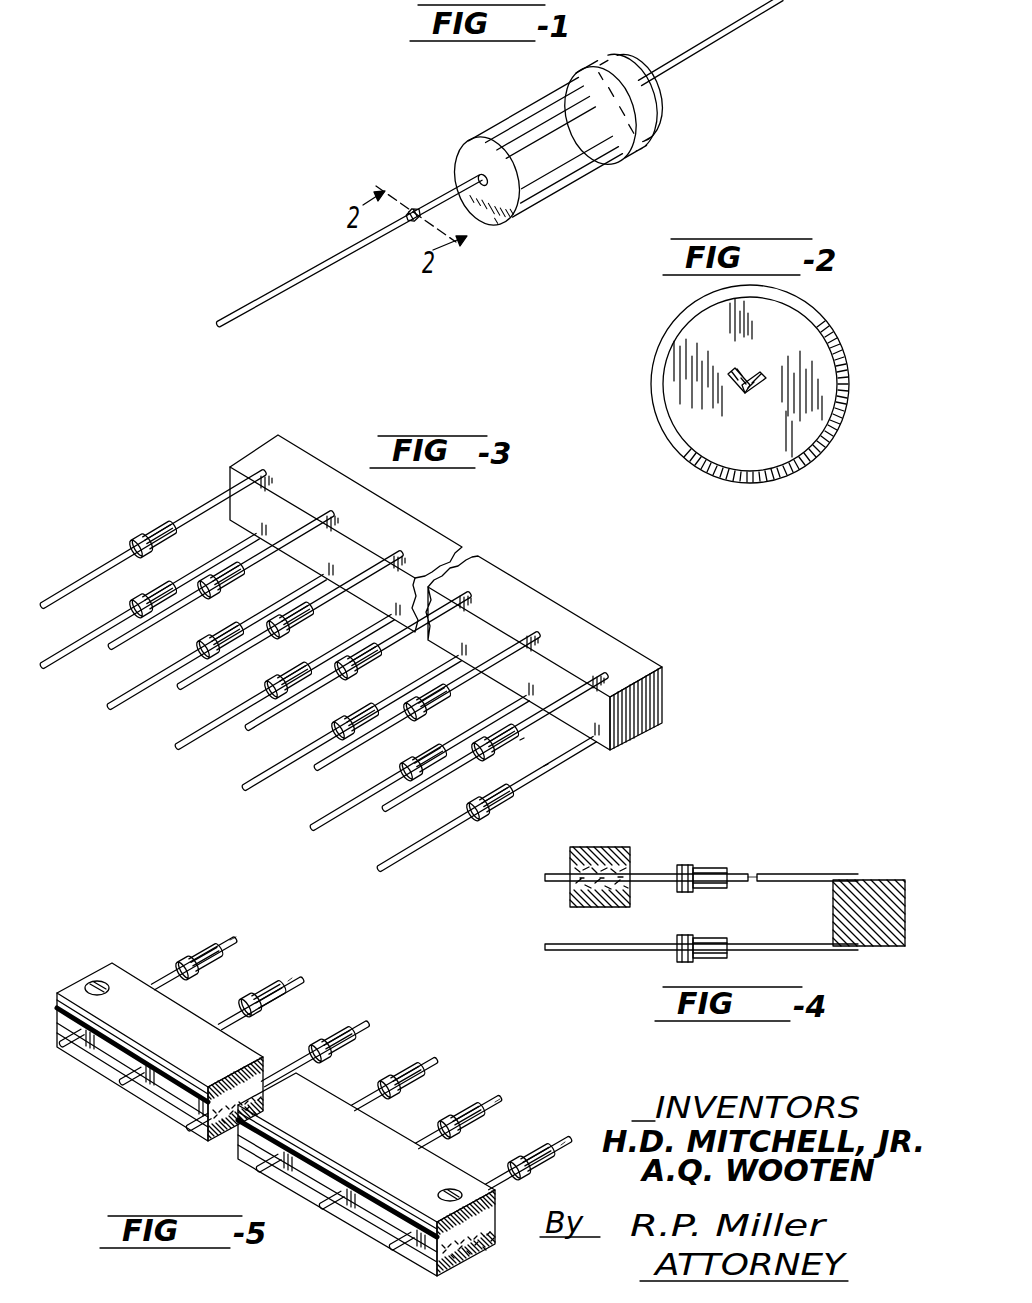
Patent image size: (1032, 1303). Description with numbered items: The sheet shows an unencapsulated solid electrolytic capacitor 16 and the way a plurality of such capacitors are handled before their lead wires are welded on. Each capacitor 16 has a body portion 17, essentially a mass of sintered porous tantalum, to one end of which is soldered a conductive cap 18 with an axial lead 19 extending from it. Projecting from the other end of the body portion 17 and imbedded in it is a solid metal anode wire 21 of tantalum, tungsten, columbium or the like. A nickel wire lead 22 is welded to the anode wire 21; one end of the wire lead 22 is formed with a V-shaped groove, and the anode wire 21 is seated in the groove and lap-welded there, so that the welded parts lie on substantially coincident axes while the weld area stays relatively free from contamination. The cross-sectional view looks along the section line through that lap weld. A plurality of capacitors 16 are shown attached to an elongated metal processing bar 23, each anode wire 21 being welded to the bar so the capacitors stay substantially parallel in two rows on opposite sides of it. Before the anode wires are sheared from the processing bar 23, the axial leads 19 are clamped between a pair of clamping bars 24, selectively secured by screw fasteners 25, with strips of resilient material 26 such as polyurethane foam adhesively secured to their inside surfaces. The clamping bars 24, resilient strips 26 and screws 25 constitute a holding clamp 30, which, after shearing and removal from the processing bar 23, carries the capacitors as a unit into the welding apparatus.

In FIG. 1, the solid electrolytic capacitor 16 is at (499, 164).
In FIG. 2, the solid electrolytic capacitor 16 is at (758, 405).
In FIG. 3, the solid electrolytic capacitor 16 is at (323, 647).
In FIG. 1, the body portion 17 is at (499, 128).
In FIG. 2, the body portion 17 is at (680, 410).
In FIG. 3, the body portion 17 is at (163, 587).
In FIG. 4, the body portion 17 is at (728, 900).
In FIG. 5, the body portion 17 is at (333, 1030).
In FIG. 1, the conductive cap 18 is at (605, 72).
In FIG. 2, the conductive cap 18 is at (830, 340).
In FIG. 3, the conductive cap 18 is at (350, 678).
In FIG. 4, the conductive cap 18 is at (682, 900).
In FIG. 5, the conductive cap 18 is at (250, 1005).
In FIG. 1, the axial lead 19 is at (707, 43).
In FIG. 3, the axial lead 19 is at (118, 697).
In FIG. 4, the axial lead 19 is at (655, 905).
In FIG. 5, the axial lead 19 is at (135, 1088).
In FIG. 1, the anode wire 21 is at (433, 197).
In FIG. 2, the anode wire 21 is at (753, 370).
In FIG. 3, the anode wire 21 is at (546, 765).
In FIG. 4, the anode wire 21 is at (746, 875).
In FIG. 5, the anode wire 21 is at (290, 972).
In FIG. 1, the wire lead 22 is at (270, 290).
In FIG. 2, the wire lead 22 is at (747, 400).
In FIG. 3, the processing bar 23 is at (641, 660).
In FIG. 4, the processing bar 23 is at (880, 880).
In FIG. 5, the processing bar 23 is at (160, 1026).
In FIG. 4, the clamping bar 24 is at (628, 848).
In FIG. 5, the clamping bar 24 is at (493, 1197).
In FIG. 5, the screw fastener 25 is at (100, 980).
In FIG. 4, the strip of resilient material 26 is at (570, 887).
In FIG. 5, the strip of resilient material 26 is at (494, 1230).
In FIG. 5, the holding clamp 30 is at (315, 1097).